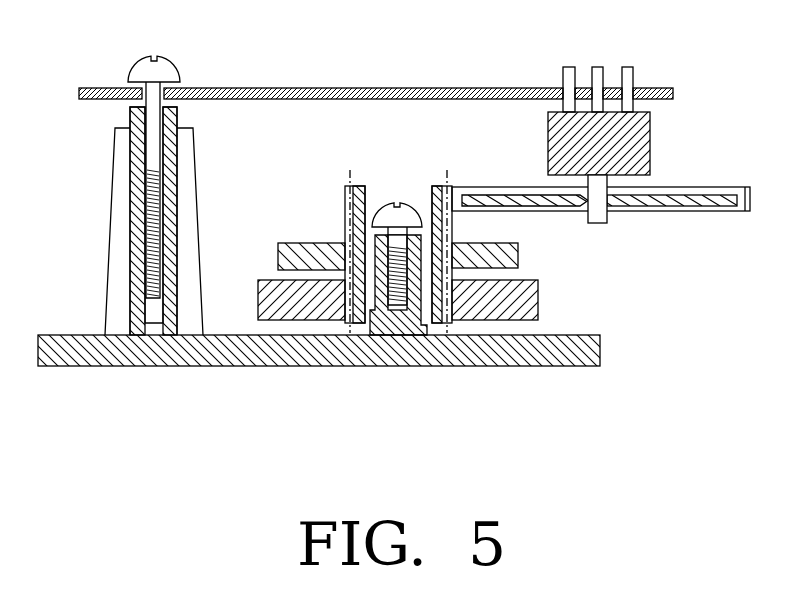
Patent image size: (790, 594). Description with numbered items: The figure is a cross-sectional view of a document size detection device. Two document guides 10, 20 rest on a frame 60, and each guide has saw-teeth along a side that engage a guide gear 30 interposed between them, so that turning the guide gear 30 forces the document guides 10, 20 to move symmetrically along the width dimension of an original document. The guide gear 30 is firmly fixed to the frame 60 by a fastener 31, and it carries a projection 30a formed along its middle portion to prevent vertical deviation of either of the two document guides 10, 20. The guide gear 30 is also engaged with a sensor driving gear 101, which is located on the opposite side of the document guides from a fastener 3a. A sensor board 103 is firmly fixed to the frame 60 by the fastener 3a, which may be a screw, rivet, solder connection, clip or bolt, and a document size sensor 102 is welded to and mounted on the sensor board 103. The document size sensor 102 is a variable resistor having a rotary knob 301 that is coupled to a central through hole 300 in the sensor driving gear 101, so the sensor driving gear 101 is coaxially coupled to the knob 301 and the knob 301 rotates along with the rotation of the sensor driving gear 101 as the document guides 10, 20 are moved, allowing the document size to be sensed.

The fastener 3a is at (168, 70).
The sensor board 103 is at (434, 87).
The document size sensor 102 is at (648, 137).
The sensor driving gear 101 is at (695, 210).
The rotary knob 301 is at (587, 200).
The central through hole 300 is at (608, 218).
The guide gear 30 is at (358, 185).
The projection 30a is at (305, 242).
The fastener 31 is at (407, 210).
The document guide 20 is at (297, 312).
The document guide 10 is at (530, 298).
The frame 60 is at (528, 363).